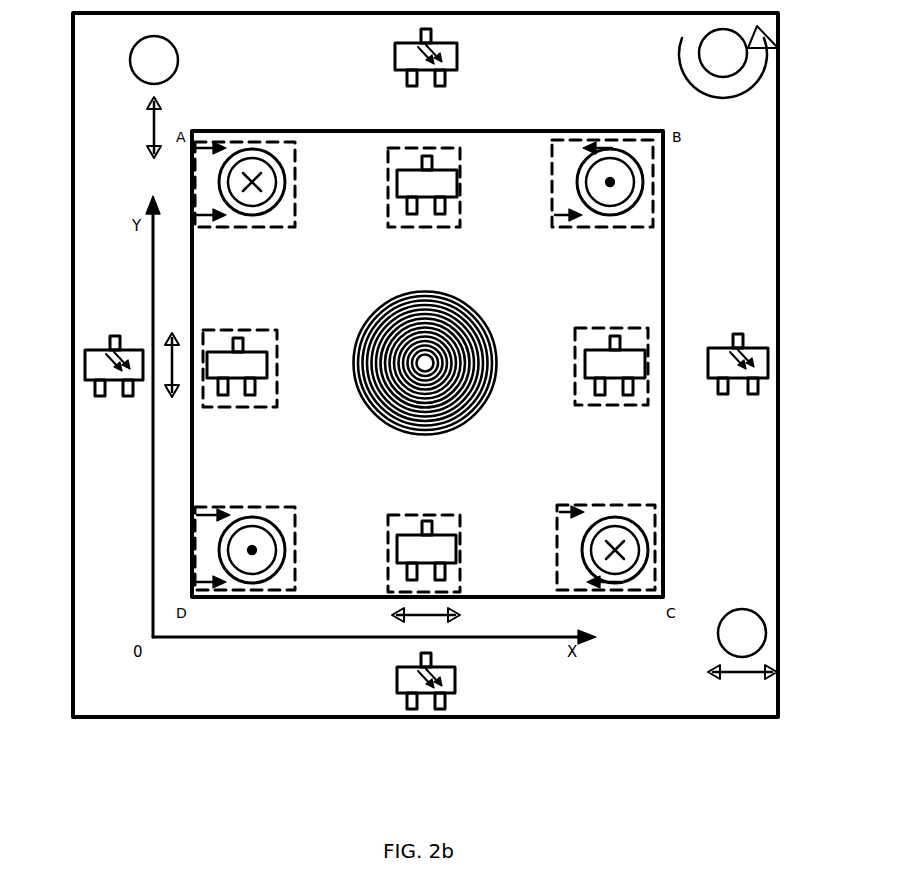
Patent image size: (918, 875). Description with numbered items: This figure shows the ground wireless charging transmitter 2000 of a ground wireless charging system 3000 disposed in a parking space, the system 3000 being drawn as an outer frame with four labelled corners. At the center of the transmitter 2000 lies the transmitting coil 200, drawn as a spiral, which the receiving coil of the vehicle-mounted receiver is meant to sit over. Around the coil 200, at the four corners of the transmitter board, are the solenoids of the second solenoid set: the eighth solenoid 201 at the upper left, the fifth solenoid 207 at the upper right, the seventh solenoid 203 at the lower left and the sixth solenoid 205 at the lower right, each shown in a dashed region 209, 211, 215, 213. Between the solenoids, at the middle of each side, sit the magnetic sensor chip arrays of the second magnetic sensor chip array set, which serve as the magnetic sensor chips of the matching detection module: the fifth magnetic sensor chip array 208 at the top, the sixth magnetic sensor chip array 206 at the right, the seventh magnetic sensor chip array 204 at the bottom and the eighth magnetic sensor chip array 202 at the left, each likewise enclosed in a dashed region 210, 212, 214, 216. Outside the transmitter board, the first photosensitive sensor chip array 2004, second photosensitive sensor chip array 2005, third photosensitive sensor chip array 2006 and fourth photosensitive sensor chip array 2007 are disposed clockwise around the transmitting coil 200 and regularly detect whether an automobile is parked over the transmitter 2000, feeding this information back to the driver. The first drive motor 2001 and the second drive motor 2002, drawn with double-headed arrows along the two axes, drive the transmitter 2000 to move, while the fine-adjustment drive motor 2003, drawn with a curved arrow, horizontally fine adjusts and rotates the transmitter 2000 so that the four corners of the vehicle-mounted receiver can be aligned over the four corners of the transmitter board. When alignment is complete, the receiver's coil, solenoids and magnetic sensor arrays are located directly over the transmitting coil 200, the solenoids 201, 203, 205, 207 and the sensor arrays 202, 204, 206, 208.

The transmitting coil 200 is at (376, 420).
The eighth solenoid 201 is at (240, 218).
The eighth magnetic sensor chip array 202 is at (227, 407).
The seventh solenoid 203 is at (222, 516).
The seventh magnetic sensor chip array 204 is at (395, 537).
The sixth solenoid 205 is at (563, 537).
The sixth magnetic sensor chip array 206 is at (580, 393).
The fifth solenoid 207 is at (580, 226).
The fifth magnetic sensor chip array 208 is at (398, 207).
The first coil mounting region 209 is at (297, 192).
The first sensor mounting region 210 is at (458, 190).
The second coil mounting region 211 is at (628, 227).
The second sensor mounting region 212 is at (638, 403).
The third coil mounting region 213 is at (558, 510).
The third sensor mounting region 214 is at (457, 538).
The fourth coil mounting region 215 is at (296, 540).
The fourth sensor mounting region 216 is at (277, 346).
The wireless charging transmitter 2000 is at (556, 128).
The first drive motor 2001 is at (727, 607).
The second drive motor 2002 is at (178, 72).
The fine-adjustment drive motor 2003 is at (752, 98).
The first photosensitive sensor chip array 2004 is at (394, 44).
The second photosensitive sensor chip array 2005 is at (748, 396).
The third photosensitive sensor chip array 2006 is at (395, 667).
The fourth photosensitive sensor chip array 2007 is at (130, 393).
The ground wireless charging system 3000 is at (120, 726).